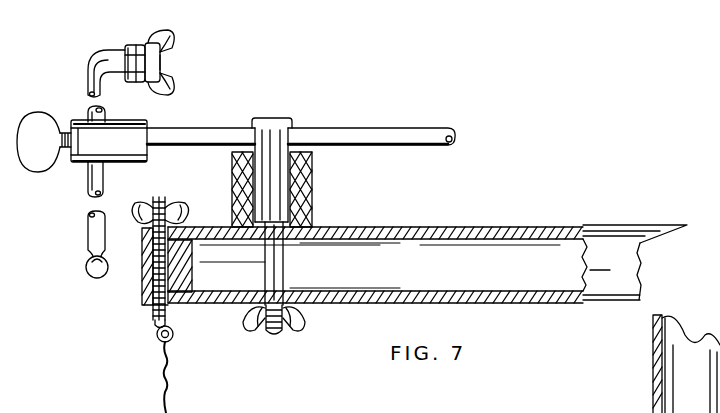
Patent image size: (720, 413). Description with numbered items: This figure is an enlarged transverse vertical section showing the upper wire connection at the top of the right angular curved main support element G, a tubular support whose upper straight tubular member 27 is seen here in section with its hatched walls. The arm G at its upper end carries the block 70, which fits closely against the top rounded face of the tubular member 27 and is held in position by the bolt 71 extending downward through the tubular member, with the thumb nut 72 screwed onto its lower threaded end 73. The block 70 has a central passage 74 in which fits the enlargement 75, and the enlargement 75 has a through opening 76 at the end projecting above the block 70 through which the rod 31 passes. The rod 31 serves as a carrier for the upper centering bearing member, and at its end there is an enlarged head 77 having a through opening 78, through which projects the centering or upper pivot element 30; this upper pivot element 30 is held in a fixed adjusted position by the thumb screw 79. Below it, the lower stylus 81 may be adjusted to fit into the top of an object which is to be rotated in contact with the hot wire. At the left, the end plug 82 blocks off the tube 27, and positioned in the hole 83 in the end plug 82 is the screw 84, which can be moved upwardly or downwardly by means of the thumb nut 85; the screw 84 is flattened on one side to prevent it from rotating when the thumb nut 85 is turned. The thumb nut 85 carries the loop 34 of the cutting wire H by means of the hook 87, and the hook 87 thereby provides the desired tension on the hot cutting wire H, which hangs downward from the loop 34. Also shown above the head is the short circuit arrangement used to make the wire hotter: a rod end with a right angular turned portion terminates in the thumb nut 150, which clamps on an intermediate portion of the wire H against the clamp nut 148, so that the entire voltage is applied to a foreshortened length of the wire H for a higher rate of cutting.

The upper straight tubular member 27 is at (415, 233).
The upper pivot element 30 is at (92, 118).
The rod 31 is at (395, 137).
The looped end 34 is at (175, 332).
The block 70 is at (232, 180).
The bolt 71 is at (272, 268).
The thumb nut 72 is at (303, 330).
The lower threaded end 73 is at (273, 335).
The central passage 74 is at (312, 197).
The enlargement 75 is at (273, 117).
The through opening 76 is at (288, 142).
The enlarged head 77 is at (132, 128).
The through opening 78 is at (92, 162).
The thumb screw 79 is at (35, 122).
The lower stylus 81 is at (88, 265).
The end plug 82 is at (143, 283).
The hole 83 is at (188, 233).
The screw 84 is at (162, 197).
The thumb nut 85 is at (143, 208).
The hook 87 is at (172, 347).
The clamp nut 148 is at (127, 44).
The thumb nut 150 is at (167, 30).
The cutting wire H is at (165, 400).
The main support element G is at (673, 372).